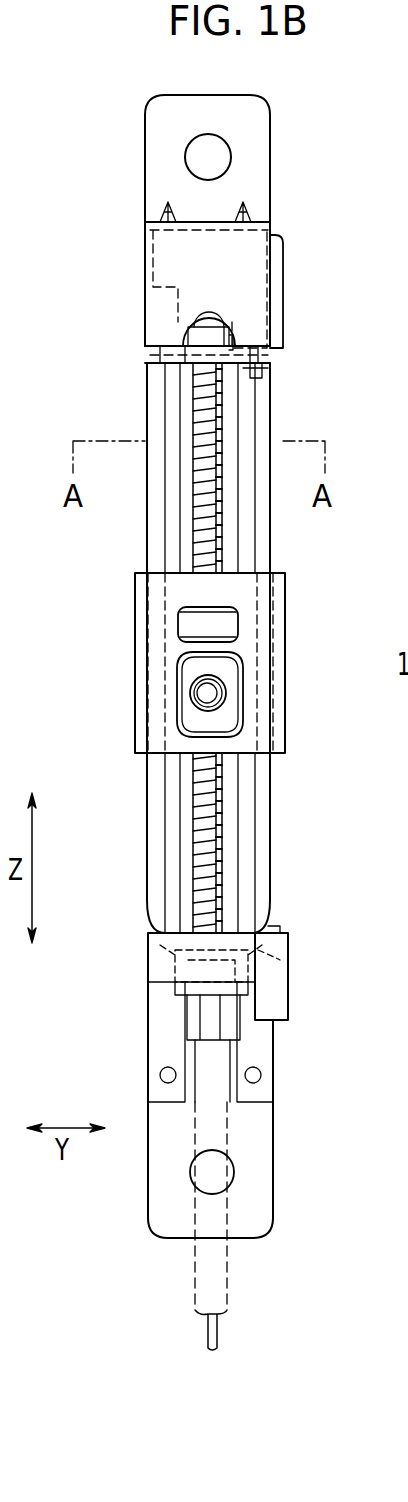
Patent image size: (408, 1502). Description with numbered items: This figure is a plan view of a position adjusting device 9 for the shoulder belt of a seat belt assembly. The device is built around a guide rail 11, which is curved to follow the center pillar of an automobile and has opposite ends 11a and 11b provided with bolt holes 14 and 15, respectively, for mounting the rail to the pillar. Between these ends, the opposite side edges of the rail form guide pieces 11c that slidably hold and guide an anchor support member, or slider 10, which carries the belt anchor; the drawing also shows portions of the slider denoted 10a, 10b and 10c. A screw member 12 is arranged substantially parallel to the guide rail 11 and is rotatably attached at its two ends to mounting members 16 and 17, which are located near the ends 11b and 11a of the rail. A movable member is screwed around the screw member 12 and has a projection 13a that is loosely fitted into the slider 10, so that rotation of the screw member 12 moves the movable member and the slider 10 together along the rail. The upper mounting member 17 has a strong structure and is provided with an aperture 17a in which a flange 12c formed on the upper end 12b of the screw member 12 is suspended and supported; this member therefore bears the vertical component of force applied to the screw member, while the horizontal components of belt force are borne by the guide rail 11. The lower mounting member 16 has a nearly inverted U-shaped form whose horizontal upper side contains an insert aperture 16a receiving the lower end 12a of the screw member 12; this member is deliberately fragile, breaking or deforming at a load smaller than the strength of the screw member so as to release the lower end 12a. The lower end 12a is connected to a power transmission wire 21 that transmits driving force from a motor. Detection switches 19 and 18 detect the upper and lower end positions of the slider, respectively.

The position adjusting device 9 is at (300, 783).
The anchor support member (slider) 10 is at (205, 706).
The slider block side 10a is at (285, 600).
The slider bore 10b is at (200, 690).
The slider boss 10c is at (240, 703).
The guide rail 11 is at (272, 895).
The upper end of guide rail 11a is at (270, 205).
The lower end of guide rail 11b is at (273, 1153).
The guide pieces 11c is at (147, 882).
The screw member 12 is at (205, 490).
The lower end of screw member 12a is at (148, 955).
The upper end of screw member 12b is at (145, 343).
The flange 12c is at (232, 340).
The projection 13a is at (192, 625).
The bolt hole 14 is at (225, 157).
The bolt hole 15 is at (234, 1172).
The mounting member 16 is at (273, 1058).
The insert aperture 16a is at (272, 960).
The mounting member 17 is at (147, 296).
The aperture 17a is at (258, 382).
The detection switch 18 is at (283, 1003).
The detection switch 19 is at (283, 332).
The power transmission wire 21 is at (206, 1340).